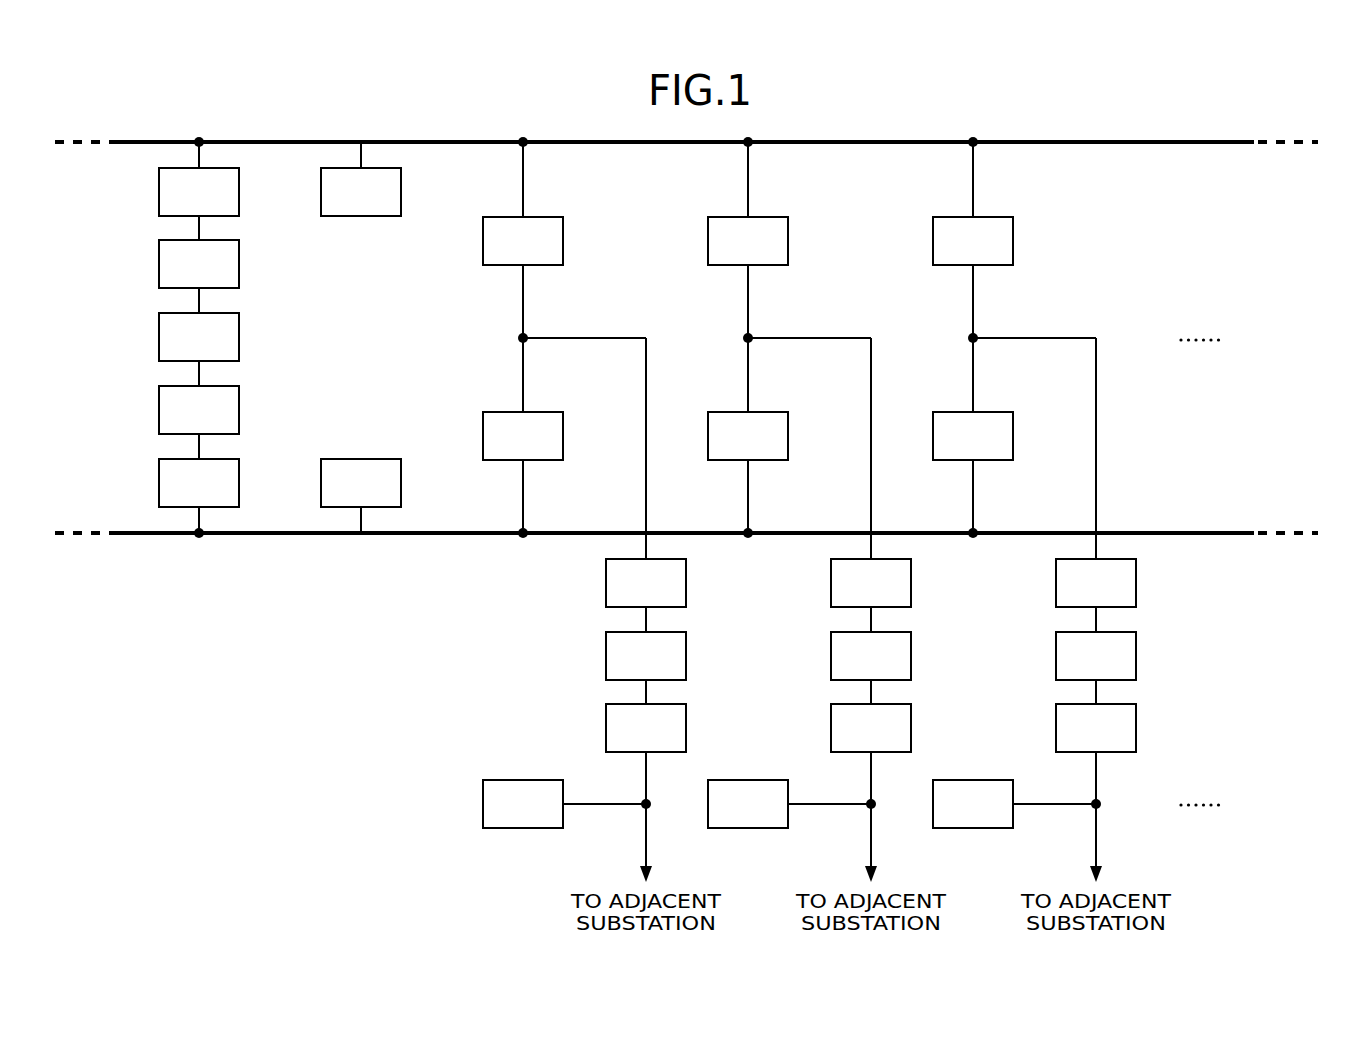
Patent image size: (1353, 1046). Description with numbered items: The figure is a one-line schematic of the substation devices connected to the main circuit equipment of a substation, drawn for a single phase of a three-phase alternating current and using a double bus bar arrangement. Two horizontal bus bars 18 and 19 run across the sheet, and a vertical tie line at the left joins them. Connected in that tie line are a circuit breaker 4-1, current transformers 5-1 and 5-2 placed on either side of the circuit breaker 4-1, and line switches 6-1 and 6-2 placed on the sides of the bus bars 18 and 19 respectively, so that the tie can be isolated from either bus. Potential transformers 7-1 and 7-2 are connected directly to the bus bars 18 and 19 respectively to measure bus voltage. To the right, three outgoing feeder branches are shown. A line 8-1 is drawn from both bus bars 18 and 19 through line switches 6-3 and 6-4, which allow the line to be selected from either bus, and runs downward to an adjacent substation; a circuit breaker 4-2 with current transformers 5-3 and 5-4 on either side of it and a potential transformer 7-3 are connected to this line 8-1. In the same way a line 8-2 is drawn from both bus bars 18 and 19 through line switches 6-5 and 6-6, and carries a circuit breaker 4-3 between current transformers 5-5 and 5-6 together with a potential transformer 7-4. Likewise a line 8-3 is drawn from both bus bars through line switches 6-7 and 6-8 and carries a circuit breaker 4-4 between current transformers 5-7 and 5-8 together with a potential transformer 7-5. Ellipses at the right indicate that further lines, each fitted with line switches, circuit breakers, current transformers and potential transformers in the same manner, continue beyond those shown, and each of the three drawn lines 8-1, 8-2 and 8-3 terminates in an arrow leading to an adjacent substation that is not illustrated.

The bus bar 18 is at (1185, 142).
The bus bar 19 is at (1185, 533).
The circuit breaker 4-1 is at (239, 337).
The circuit breaker 4-2 is at (686, 656).
The circuit breaker 4-3 is at (911, 656).
The circuit breaker 4-4 is at (1136, 656).
The current transformer 5-1 is at (239, 264).
The current transformer 5-2 is at (239, 410).
The current transformer 5-3 is at (686, 728).
The current transformer 5-4 is at (686, 583).
The current transformer 5-5 is at (911, 728).
The current transformer 5-6 is at (911, 583).
The current transformer 5-7 is at (1136, 728).
The current transformer 5-8 is at (1136, 583).
The line switch 6-1 is at (239, 192).
The line switch 6-2 is at (239, 483).
The line switch 6-3 is at (563, 241).
The line switch 6-4 is at (563, 436).
The line switch 6-5 is at (788, 241).
The line switch 6-6 is at (788, 436).
The line switch 6-7 is at (1013, 241).
The line switch 6-8 is at (1013, 436).
The potential transformer 7-1 is at (401, 192).
The potential transformer 7-2 is at (401, 483).
The potential transformer 7-3 is at (523, 829).
The potential transformer 7-4 is at (748, 829).
The potential transformer 7-5 is at (973, 829).
The line 8-1 is at (620, 338).
The line 8-2 is at (845, 338).
The line 8-3 is at (1070, 338).